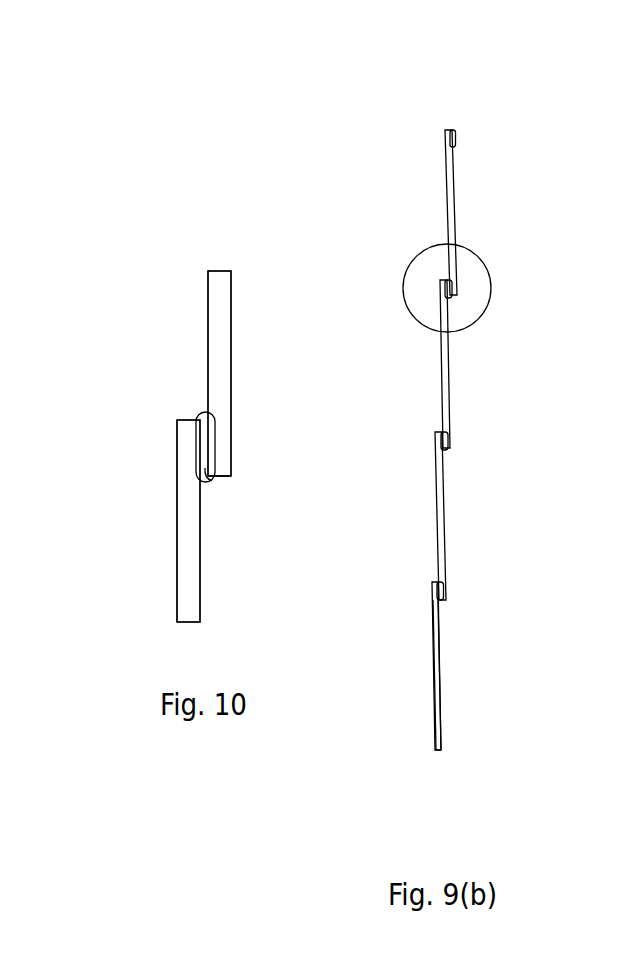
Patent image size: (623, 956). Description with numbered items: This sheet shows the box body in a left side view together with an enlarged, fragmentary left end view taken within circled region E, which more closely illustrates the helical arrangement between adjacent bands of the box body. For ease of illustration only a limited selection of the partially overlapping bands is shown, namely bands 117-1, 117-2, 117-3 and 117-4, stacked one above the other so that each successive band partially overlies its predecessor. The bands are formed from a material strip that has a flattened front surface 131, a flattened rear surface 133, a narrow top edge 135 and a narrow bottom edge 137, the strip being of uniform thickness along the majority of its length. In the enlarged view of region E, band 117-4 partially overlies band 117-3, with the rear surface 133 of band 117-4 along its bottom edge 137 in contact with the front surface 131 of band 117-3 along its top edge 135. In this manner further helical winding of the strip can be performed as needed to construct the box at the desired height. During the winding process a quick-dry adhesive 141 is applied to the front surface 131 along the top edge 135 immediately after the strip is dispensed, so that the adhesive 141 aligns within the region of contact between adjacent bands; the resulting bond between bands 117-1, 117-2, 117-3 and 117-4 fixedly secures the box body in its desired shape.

In FIG. 9B, the band 117-1 is at (440, 638).
In FIG. 9B, the band 117-2 is at (443, 502).
In FIG. 10, the band 117-3 is at (187, 556).
In FIG. 9B, the band 117-3 is at (447, 363).
In FIG. 10, the band 117-4 is at (231, 333).
In FIG. 9B, the band 117-4 is at (453, 172).
In FIG. 10, the front surface 131 is at (200, 582).
In FIG. 9B, the front surface 131 is at (442, 710).
In FIG. 10, the rear surface 133 is at (208, 293).
In FIG. 9B, the rear surface 133 is at (434, 676).
In FIG. 10, the top edge 135 is at (185, 420).
In FIG. 9B, the top edge 135 is at (437, 582).
In FIG. 10, the bottom edge 137 is at (230, 477).
In FIG. 9B, the bottom edge 137 is at (441, 750).
In FIG. 10, the quick-dry adhesive 141 is at (204, 479).
In FIG. 9B, the quick-dry adhesive 141 is at (458, 137).
In FIG. 9B, the circled region E is at (493, 287).